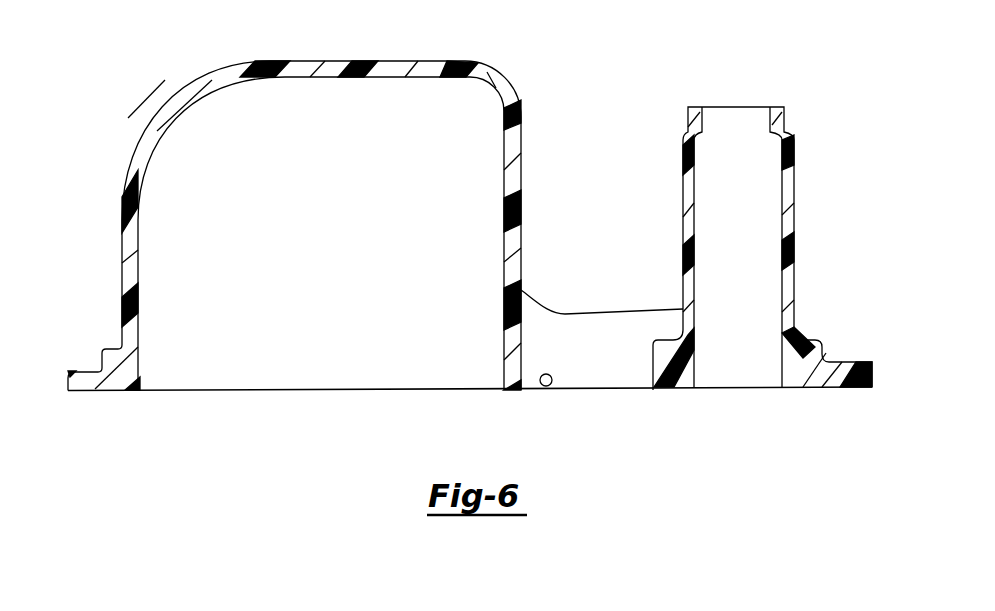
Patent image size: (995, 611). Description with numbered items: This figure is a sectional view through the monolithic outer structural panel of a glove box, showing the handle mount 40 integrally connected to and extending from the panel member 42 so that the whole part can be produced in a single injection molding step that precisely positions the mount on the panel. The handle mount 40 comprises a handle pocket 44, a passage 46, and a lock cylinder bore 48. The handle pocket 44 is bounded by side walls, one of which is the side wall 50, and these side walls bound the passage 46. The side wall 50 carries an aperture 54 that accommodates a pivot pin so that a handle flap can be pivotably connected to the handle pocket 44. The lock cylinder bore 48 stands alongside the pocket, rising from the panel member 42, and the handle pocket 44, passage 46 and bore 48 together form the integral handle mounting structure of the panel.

The handle mount 40 is at (482, 410).
The panel member 42 is at (111, 391).
The handle pocket 44 is at (300, 206).
The passage 46 is at (596, 388).
The lock cylinder bore 48 is at (748, 264).
The side wall 50 is at (587, 333).
The aperture 54 is at (546, 386).